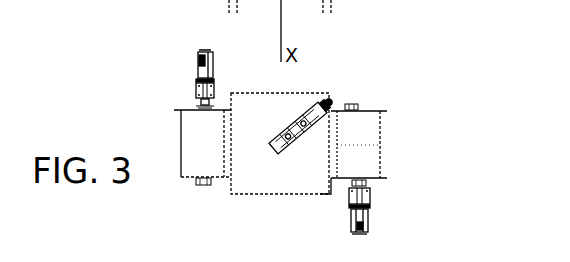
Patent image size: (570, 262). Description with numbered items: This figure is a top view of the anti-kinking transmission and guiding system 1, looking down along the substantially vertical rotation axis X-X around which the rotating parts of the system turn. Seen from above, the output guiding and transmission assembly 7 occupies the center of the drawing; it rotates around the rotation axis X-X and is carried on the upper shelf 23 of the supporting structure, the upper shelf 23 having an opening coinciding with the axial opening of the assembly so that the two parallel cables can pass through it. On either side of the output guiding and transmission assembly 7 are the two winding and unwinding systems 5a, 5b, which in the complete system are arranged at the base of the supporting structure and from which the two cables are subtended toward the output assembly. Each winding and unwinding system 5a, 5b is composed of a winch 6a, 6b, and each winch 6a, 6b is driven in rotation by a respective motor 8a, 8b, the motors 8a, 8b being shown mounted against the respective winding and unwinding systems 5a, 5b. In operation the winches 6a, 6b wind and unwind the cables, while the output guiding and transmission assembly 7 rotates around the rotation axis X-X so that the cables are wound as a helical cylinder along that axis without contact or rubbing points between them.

The anti-kinking transmission and guiding system 1 is at (410, 82).
The output guiding and transmission assembly 7 is at (341, 93).
The upper shelf 23 is at (282, 171).
The winding and unwinding system 5a is at (410, 160).
The winding and unwinding system 5b is at (163, 109).
The winch 6a is at (370, 140).
The winch 6b is at (194, 161).
The motor 8a is at (360, 200).
The motor 8b is at (200, 60).